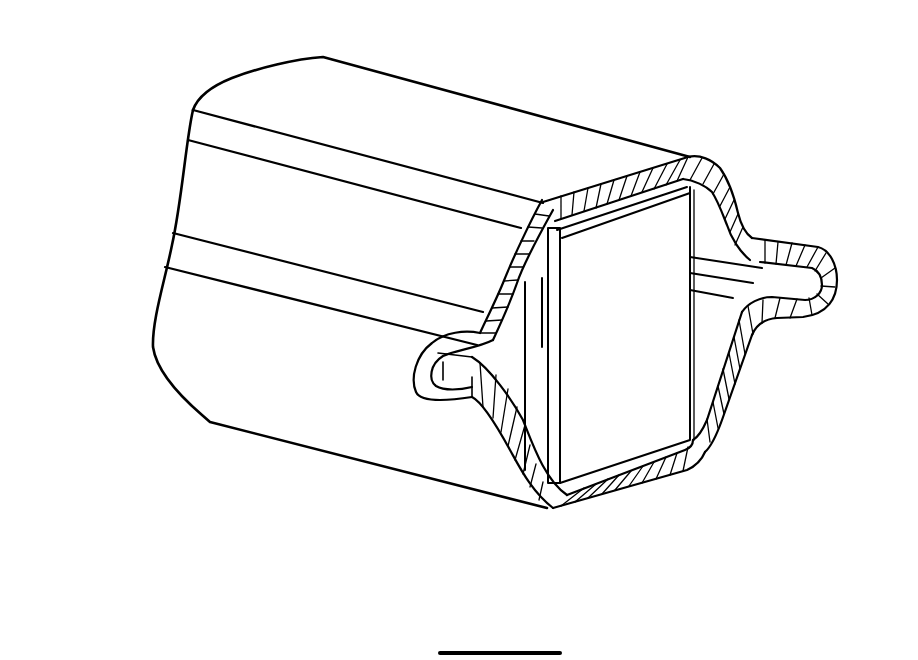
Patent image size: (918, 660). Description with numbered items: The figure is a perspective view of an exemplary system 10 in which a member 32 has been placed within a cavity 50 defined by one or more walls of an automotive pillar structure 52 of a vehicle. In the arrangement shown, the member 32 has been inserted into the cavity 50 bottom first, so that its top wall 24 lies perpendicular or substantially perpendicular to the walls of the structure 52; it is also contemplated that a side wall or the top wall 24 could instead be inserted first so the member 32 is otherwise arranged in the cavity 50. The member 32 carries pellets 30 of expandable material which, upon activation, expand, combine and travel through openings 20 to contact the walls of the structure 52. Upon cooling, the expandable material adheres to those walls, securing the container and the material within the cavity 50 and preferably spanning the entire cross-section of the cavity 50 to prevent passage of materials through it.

The system 10 is at (132, 110).
The automotive pillar structure 52 is at (334, 240).
The openings 20 is at (499, 315).
The top wall 24 is at (645, 345).
The pellets of expandable material 30 is at (487, 352).
The member 32 is at (705, 335).
The cavity 50 is at (503, 373).